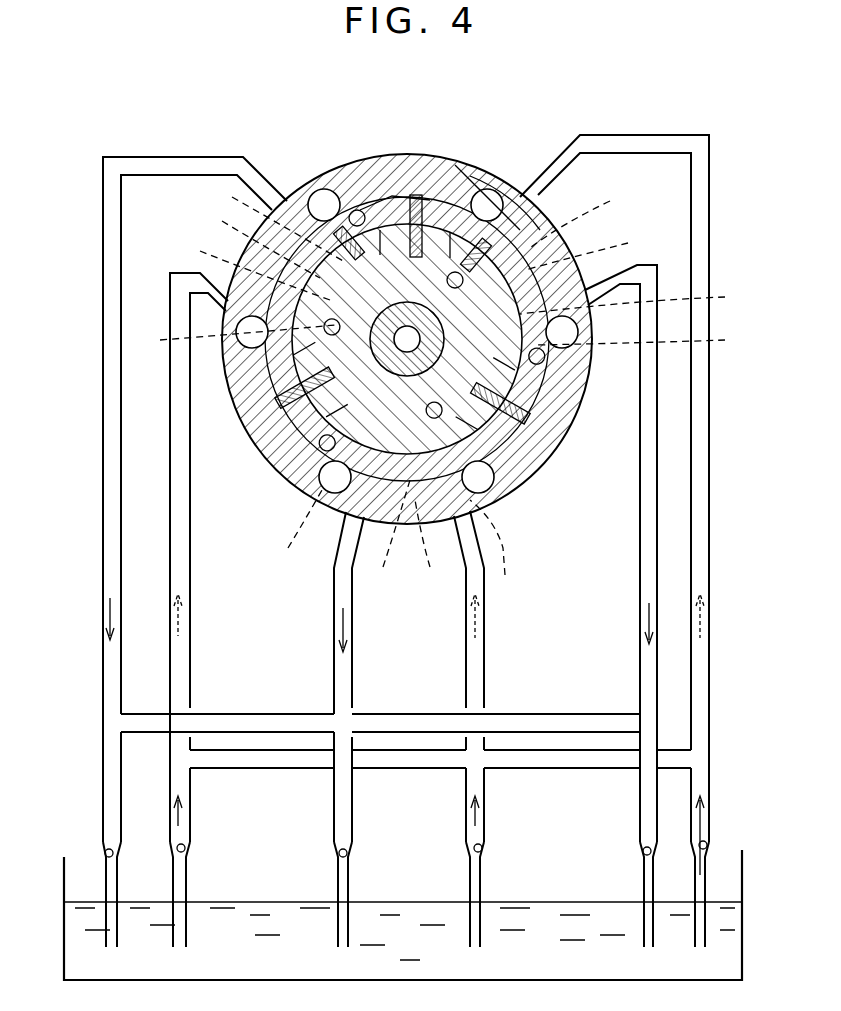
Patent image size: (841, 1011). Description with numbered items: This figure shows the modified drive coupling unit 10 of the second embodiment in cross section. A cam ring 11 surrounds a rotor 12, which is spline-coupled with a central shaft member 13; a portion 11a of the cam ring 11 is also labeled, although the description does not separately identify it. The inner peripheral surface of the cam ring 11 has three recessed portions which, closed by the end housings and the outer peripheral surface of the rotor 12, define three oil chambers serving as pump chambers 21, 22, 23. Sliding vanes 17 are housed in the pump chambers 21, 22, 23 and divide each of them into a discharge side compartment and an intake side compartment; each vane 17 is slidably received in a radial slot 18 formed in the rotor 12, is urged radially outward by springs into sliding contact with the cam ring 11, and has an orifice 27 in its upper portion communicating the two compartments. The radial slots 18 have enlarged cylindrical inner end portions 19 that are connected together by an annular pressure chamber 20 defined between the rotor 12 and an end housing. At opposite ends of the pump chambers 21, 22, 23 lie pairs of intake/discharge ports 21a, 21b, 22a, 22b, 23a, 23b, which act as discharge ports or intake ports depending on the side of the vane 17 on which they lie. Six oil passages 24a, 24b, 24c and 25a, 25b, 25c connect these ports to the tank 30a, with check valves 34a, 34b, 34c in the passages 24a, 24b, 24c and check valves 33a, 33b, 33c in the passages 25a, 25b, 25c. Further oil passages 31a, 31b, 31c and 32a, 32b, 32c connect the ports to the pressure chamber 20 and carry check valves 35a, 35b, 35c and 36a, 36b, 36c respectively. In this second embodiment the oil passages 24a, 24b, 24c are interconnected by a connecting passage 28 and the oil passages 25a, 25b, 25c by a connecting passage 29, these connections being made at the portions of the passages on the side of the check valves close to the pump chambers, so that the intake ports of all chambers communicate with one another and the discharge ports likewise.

The drive coupling unit 10 is at (100, 722).
The cam ring 11 is at (443, 166).
The bolt hole 11a is at (320, 197).
The rotor 12 is at (520, 255).
The shaft member 13 is at (375, 351).
The sliding vane 17 is at (432, 207).
The radial slot 18 is at (548, 217).
The enlarged cylindrical inner end portion 19 is at (393, 215).
The annular pressure chamber 20 is at (646, 265).
The pump chamber 21 is at (401, 203).
The intake/discharge port 21a is at (355, 212).
The intake/discharge port 21b is at (497, 212).
The pump chamber 22 is at (300, 420).
The intake/discharge port 22a is at (330, 468).
The intake/discharge port 22b is at (283, 380).
The pump chamber 23 is at (505, 405).
The intake/discharge port 23a is at (530, 398).
The intake/discharge port 23b is at (470, 430).
The oil passage 24a is at (103, 486).
The oil passage 24b is at (352, 635).
The oil passage 24c is at (640, 667).
The oil passage 25a is at (709, 667).
The oil passage 25b is at (190, 594).
The oil passage 25c is at (484, 636).
The orifice 27 is at (455, 212).
The connecting passage 28 is at (262, 714).
The connecting passage 29 is at (232, 768).
The tank 30a is at (64, 932).
The oil passage 31a is at (585, 217).
The oil passage 31b is at (229, 337).
The oil passage 31c is at (501, 548).
The oil passage 32a is at (269, 221).
The oil passage 32b is at (385, 535).
The oil passage 32c is at (639, 299).
The check valve 33a is at (708, 845).
The check valve 33b is at (186, 848).
The check valve 33c is at (475, 848).
The check valve 34a is at (104, 852).
The check valve 34b is at (338, 852).
The check valve 34c is at (644, 851).
The check valve 35a is at (592, 248).
The check valve 35b is at (243, 267).
The check valve 35c is at (432, 545).
The check valve 36a is at (251, 241).
The check valve 36b is at (288, 528).
The check valve 36c is at (648, 337).